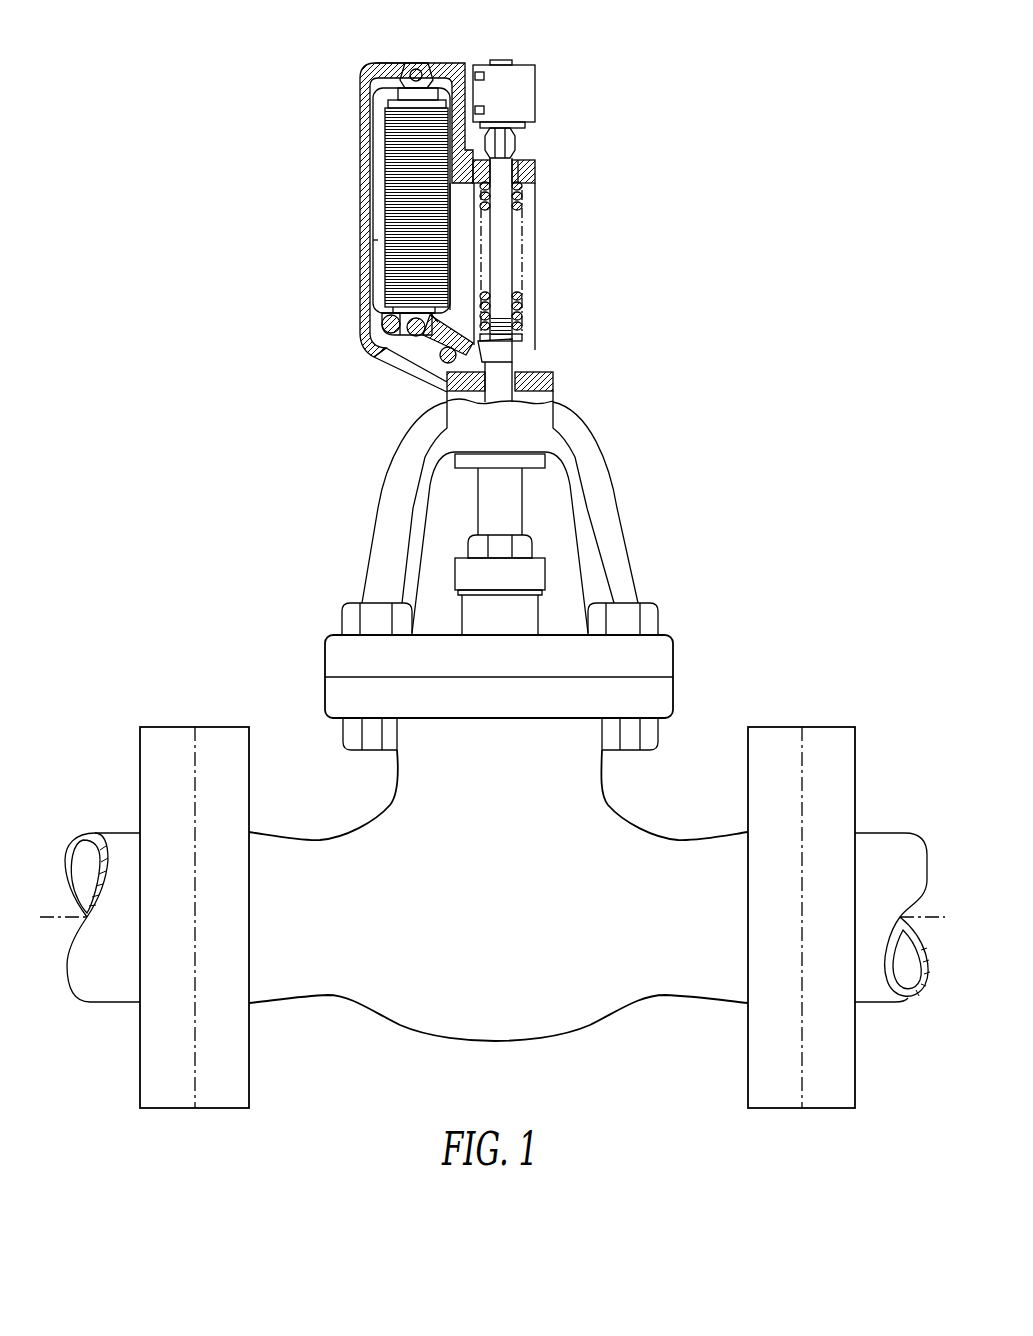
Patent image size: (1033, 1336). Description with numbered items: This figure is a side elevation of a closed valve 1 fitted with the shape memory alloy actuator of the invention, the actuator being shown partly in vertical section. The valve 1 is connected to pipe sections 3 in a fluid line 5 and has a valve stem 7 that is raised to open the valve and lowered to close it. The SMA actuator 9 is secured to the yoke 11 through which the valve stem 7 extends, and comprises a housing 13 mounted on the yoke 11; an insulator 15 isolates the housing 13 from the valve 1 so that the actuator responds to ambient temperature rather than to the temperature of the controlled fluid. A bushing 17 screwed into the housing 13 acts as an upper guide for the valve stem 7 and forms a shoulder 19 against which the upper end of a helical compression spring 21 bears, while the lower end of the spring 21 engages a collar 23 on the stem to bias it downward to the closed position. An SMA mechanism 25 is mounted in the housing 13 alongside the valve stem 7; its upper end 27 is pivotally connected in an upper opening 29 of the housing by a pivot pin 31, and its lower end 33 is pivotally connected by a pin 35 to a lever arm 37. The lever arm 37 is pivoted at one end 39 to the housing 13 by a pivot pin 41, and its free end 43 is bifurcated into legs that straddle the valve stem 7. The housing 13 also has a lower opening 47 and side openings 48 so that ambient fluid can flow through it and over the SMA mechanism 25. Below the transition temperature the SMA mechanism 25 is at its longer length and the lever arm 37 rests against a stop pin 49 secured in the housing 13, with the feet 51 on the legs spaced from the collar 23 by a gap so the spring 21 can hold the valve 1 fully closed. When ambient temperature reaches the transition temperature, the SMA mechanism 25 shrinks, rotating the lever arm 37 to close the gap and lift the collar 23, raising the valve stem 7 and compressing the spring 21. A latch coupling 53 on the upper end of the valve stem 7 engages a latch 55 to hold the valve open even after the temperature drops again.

The valve 1 is at (400, 995).
The pipe sections 3 is at (118, 833).
The fluid line 5 is at (920, 917).
The valve stem 7 is at (498, 230).
The shape memory alloy (SMA) actuator 9 is at (345, 145).
The yoke 11 is at (625, 530).
The housing 13 is at (363, 290).
The insulator 15 is at (555, 386).
The bushing 17 is at (540, 165).
The shoulder 19 is at (540, 186).
The helical compression spring 21 is at (527, 200).
The collar 23 is at (521, 332).
The SMA mechanism 25 is at (376, 240).
The upper end 27 is at (395, 95).
The upper opening 29 is at (406, 64).
The pivot pin 31 is at (418, 64).
The lower end 33 is at (390, 314).
The pin 35 is at (430, 327).
The lever arm 37 is at (420, 368).
The one end 39 is at (382, 323).
The pivot pin 41 is at (386, 333).
The free end 43 is at (515, 352).
The lower opening 47 is at (388, 355).
The side openings 48 is at (383, 192).
The stop pin 49 is at (441, 360).
The feet 51 is at (518, 352).
The latch coupling 53 is at (520, 142).
The latch 55 is at (524, 70).